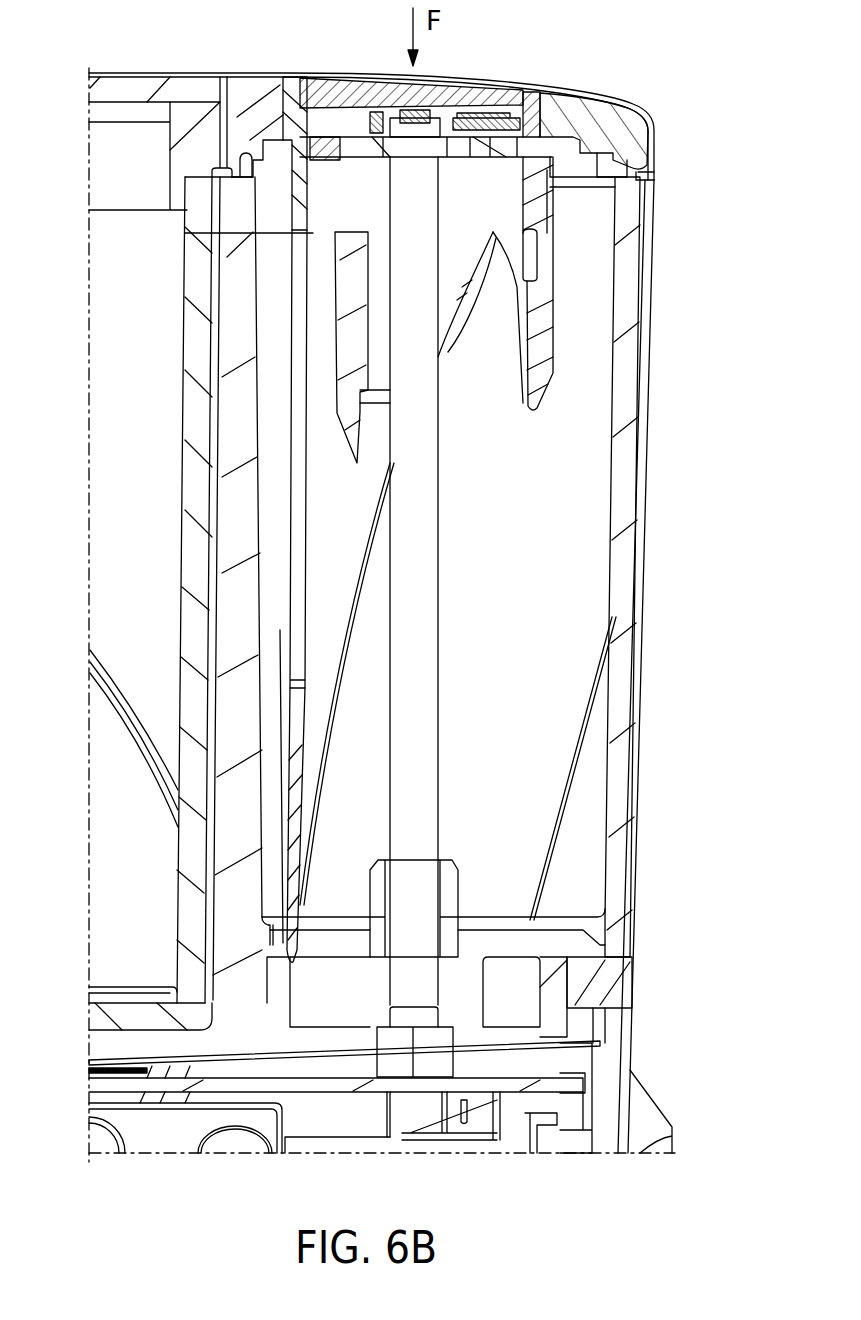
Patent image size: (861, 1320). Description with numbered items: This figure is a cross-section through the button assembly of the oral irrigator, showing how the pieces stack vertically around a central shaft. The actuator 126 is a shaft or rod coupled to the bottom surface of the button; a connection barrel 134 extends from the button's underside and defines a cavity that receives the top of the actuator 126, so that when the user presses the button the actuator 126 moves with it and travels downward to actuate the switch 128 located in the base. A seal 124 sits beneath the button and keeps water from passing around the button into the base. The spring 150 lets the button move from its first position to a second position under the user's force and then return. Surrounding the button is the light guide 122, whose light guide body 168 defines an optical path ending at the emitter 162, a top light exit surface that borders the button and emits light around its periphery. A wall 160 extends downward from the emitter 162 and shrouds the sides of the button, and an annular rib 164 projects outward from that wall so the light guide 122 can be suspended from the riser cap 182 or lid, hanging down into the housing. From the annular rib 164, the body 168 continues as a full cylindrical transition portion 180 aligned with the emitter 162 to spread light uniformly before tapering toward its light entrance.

The light guide 122 is at (500, 208).
The seal 124 is at (347, 130).
The actuator 126 is at (420, 675).
The switch 128 is at (413, 1007).
The connection barrel 134 is at (450, 110).
The spring 150 is at (325, 150).
The wall 160 is at (278, 105).
The emitter 162 is at (309, 102).
The annular rib 164 is at (277, 140).
The light guide body 168 is at (508, 186).
The transition portion 180 is at (500, 944).
The riser cap 182 is at (616, 117).